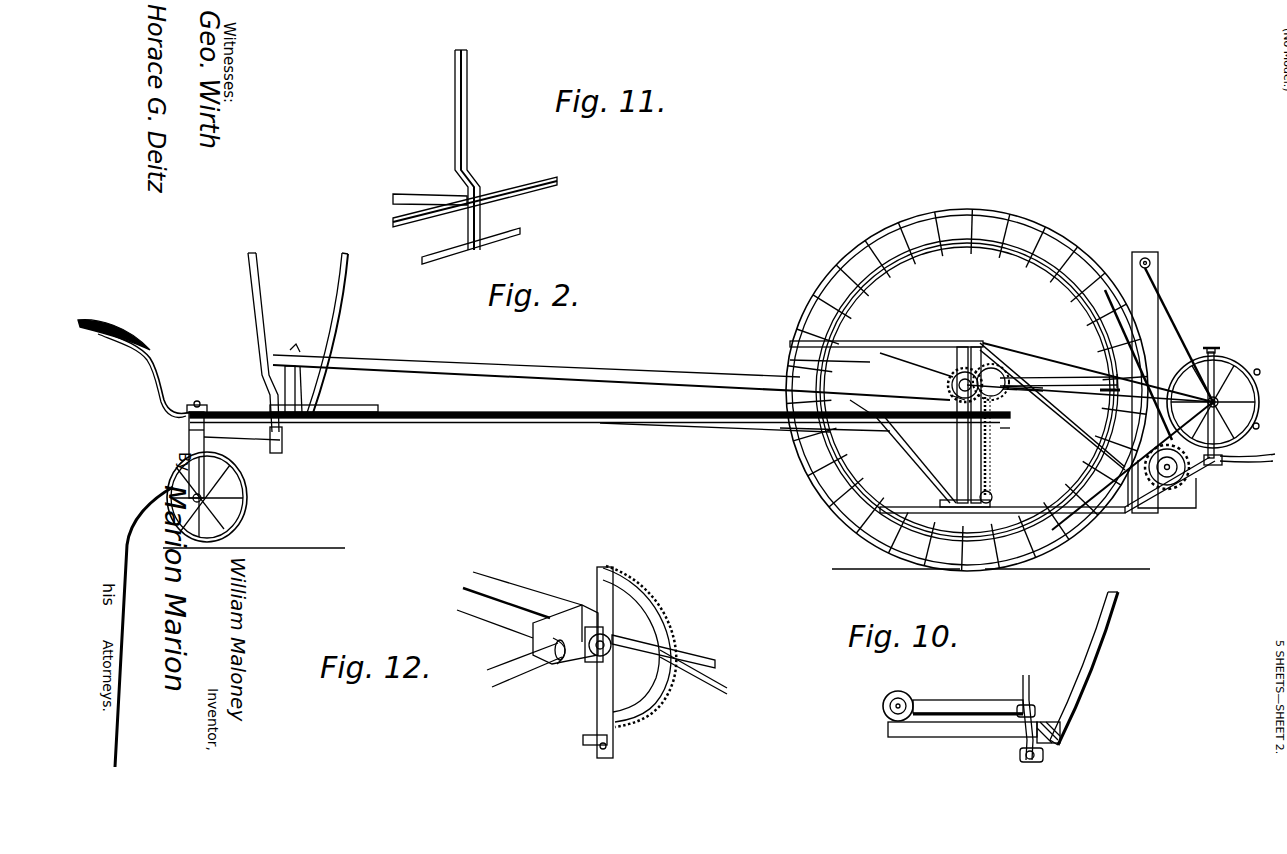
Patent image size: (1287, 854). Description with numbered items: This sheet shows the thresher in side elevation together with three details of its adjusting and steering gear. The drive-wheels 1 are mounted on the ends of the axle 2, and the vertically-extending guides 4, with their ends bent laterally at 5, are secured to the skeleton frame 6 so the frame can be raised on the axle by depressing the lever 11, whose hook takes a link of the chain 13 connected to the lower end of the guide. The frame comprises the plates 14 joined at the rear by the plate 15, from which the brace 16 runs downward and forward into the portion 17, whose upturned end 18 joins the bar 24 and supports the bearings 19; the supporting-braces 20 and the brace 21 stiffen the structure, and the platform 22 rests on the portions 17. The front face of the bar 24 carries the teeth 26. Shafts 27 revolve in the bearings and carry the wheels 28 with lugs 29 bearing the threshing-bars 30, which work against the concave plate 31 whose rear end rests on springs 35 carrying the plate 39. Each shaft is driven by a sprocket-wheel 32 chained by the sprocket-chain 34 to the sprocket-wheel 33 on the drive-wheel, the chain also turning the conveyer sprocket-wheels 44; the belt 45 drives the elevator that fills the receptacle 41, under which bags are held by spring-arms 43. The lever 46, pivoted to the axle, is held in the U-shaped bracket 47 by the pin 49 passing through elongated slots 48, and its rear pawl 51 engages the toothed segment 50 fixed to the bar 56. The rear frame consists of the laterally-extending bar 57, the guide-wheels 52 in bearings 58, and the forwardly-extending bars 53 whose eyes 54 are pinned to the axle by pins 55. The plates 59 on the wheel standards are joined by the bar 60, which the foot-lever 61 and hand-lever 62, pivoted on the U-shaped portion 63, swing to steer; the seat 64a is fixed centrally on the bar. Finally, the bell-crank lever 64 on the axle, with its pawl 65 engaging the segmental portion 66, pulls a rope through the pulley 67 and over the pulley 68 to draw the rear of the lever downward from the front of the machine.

In FIG. 2, the drive-wheels 1 is at (985, 211).
In FIG. 2, the axle 2 is at (950, 386).
In FIG. 12, the axle 2 is at (545, 658).
In FIG. 2, the vertically-extending guides 4 is at (957, 456).
In FIG. 2, the laterally bent ends of guides 5 is at (949, 341).
In FIG. 2, the frame 6 is at (900, 340).
In FIG. 2, the lever 11 is at (900, 353).
In FIG. 2, the chain 13 is at (1001, 430).
In FIG. 2, the plates 14 is at (935, 340).
In FIG. 2, the plate 15 is at (790, 343).
In FIG. 2, the brace 16 is at (866, 450).
In FIG. 2, the forwardly-extending portion 17 is at (987, 507).
In FIG. 2, the upwardly bent end 18 is at (1172, 492).
In FIG. 2, the bearings 19 is at (1214, 429).
In FIG. 2, the supporting-braces 20 is at (915, 466).
In FIG. 2, the brace 21 is at (1045, 352).
In FIG. 2, the platform 22 is at (1100, 513).
In FIG. 2, the bar 24 is at (1226, 466).
In FIG. 2, the teeth 26 is at (1246, 458).
In FIG. 2, the shafts 27 is at (1222, 403).
In FIG. 2, the wheels 28 is at (1228, 363).
In FIG. 2, the radially-extending lugs 29 is at (1258, 369).
In FIG. 2, the threshing-bars 30 is at (1252, 373).
In FIG. 2, the concave plate 31 is at (1207, 468).
In FIG. 2, the sprocket-wheel 32 is at (1205, 403).
In FIG. 2, the sprocket-wheel on drive-wheel 33 is at (1058, 258).
In FIG. 2, the sprocket-chain 34 is at (1160, 350).
In FIG. 2, the springs 35 is at (1138, 509).
In FIG. 2, the plate 39 is at (1112, 378).
In FIG. 2, the receptacle 41 is at (1115, 336).
In FIG. 2, the spring-arms 43 is at (1130, 266).
In FIG. 2, the sprocket-wheels 44 is at (1170, 481).
In FIG. 2, the belt 45 is at (1176, 296).
In FIG. 2, the lever 46 is at (652, 366).
In FIG. 12, the lever 46 is at (476, 614).
In FIG. 2, the U-shaped bracket 47 is at (790, 361).
In FIG. 2, the elongated slots 48 is at (790, 394).
In FIG. 2, the pin 49 is at (790, 386).
In FIG. 2, the toothed segment 50 is at (323, 336).
In FIG. 10, the toothed segment 50 is at (1090, 668).
In FIG. 2, the spring-actuated pawl 51 is at (294, 346).
In FIG. 2, the guide-wheels 52 is at (247, 478).
In FIG. 2, the forwardly-extending bars 53 is at (452, 424).
In FIG. 2, the eye 54 is at (950, 396).
In FIG. 2, the pin 55 is at (992, 381).
In FIG. 10, the bar 56 is at (953, 738).
In FIG. 10, the laterally-extending bar 57 is at (888, 713).
In FIG. 2, the bearings 58 is at (208, 409).
In FIG. 2, the plates 59 is at (245, 438).
In FIG. 2, the bar 60 is at (283, 446).
In FIG. 11, the bar 60 is at (441, 256).
In FIG. 10, the bar 60 is at (1031, 762).
In FIG. 2, the foot-lever 61 is at (290, 428).
In FIG. 11, the foot-lever 61 is at (509, 190).
In FIG. 10, the foot-lever 61 is at (1036, 711).
In FIG. 2, the hand-lever 62 is at (257, 336).
In FIG. 11, the hand-lever 62 is at (468, 114).
In FIG. 10, the hand-lever 62 is at (1022, 686).
In FIG. 2, the U-shaped portion 63 is at (285, 441).
In FIG. 11, the U-shaped portion 63 is at (411, 195).
In FIG. 10, the U-shaped portion 63 is at (957, 700).
In FIG. 2, the bell-crank lever 64 is at (1008, 391).
In FIG. 12, the bell-crank lever 64 is at (728, 686).
In FIG. 2, the seat 64a is at (135, 332).
In FIG. 2, the pawl 65 is at (1022, 379).
In FIG. 12, the pawl 65 is at (707, 656).
In FIG. 2, the segmental portion 66 is at (1030, 408).
In FIG. 12, the segmental portion 66 is at (613, 573).
In FIG. 2, the pulley 67 is at (303, 400).
In FIG. 2, the pulley 68 is at (283, 372).